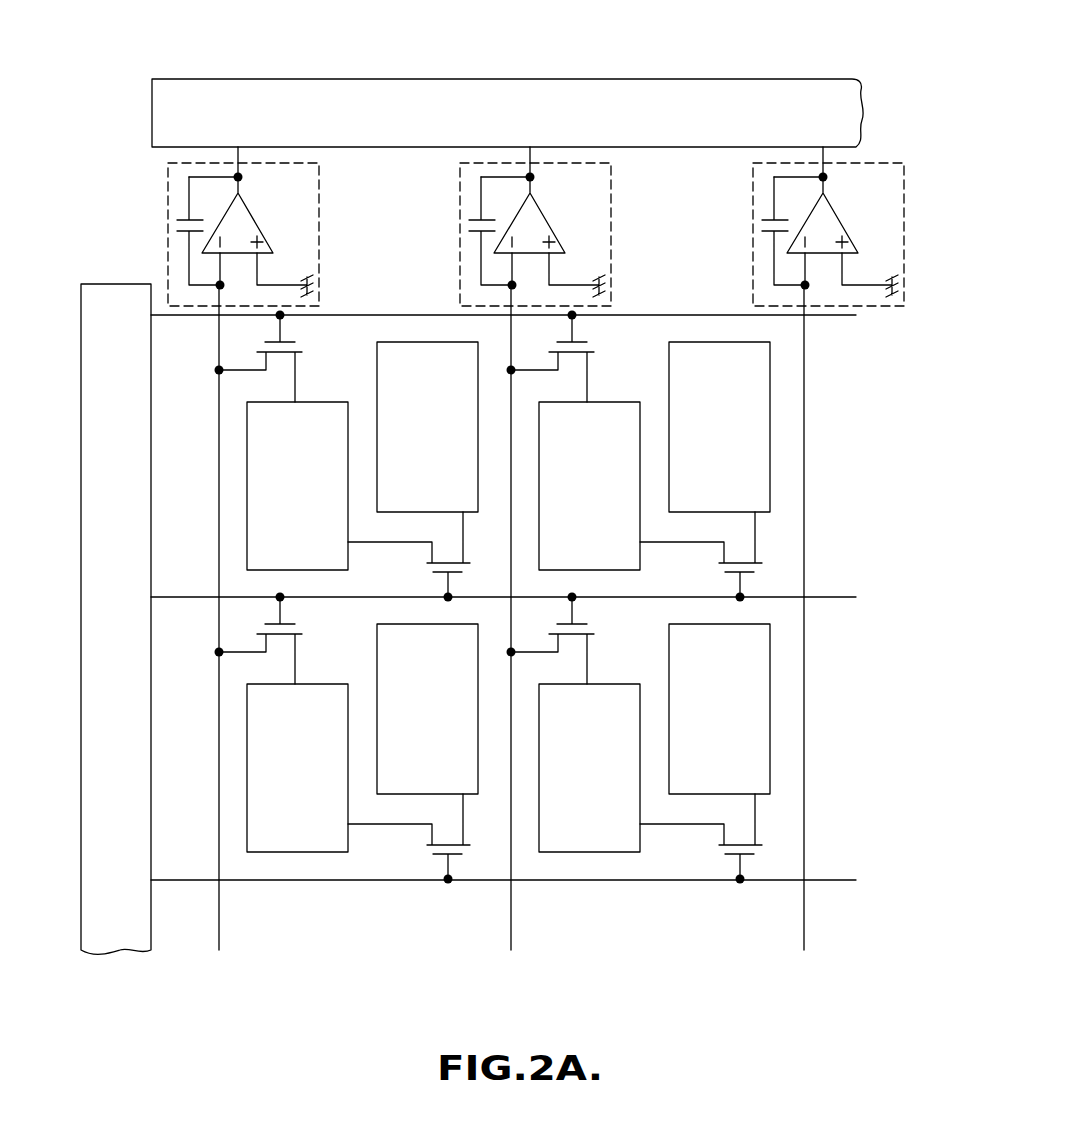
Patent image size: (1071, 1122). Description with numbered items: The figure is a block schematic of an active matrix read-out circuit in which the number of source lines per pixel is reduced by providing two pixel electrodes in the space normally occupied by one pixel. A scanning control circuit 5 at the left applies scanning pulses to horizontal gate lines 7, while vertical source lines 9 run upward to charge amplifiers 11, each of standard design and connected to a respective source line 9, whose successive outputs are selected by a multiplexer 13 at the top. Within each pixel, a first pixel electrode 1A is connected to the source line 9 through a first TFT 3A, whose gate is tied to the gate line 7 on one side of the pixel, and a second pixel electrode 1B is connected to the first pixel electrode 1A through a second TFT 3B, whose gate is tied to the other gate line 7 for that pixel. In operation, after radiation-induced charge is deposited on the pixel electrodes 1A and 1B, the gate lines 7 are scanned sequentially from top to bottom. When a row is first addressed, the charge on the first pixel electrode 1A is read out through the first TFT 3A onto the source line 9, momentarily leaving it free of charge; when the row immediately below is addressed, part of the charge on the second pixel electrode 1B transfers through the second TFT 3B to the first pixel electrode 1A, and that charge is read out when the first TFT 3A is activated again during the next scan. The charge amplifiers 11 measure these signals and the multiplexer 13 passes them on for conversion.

The first pixel electrode 1A is at (443, 627).
The second pixel electrode 1B is at (573, 568).
The first TFT 3A is at (304, 337).
The second TFT 3B is at (418, 577).
The scanning control circuit 5 is at (90, 378).
The gate lines 7 is at (828, 318).
The source lines 9 is at (219, 935).
The charge amplifiers 11 is at (168, 218).
The multiplexer 13 is at (707, 88).